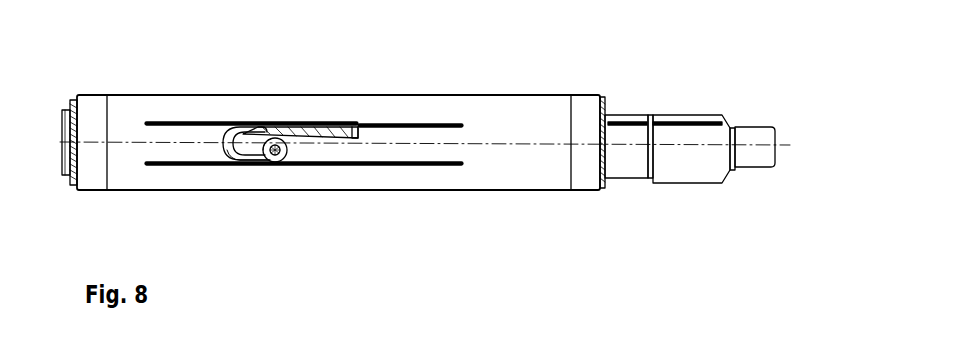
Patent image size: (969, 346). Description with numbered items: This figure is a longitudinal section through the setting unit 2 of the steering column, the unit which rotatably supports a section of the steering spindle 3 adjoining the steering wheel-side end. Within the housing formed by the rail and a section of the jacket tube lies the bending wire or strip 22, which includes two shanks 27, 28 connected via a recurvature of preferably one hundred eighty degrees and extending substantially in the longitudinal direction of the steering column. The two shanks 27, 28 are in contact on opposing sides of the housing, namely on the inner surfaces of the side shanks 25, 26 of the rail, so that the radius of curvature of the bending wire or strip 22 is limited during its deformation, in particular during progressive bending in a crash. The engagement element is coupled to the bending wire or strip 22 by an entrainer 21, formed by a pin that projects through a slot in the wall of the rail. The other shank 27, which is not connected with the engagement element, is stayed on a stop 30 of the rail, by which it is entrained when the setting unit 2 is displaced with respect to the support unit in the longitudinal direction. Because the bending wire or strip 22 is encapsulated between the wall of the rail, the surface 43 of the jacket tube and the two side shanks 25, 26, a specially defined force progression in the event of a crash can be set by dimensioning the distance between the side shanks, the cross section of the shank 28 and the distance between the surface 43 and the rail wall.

The setting unit 2 is at (549, 93).
The steering spindle 3 is at (673, 161).
The entrainer 21 is at (278, 163).
The bending wire or strip 22 is at (220, 137).
The side shank 25 is at (422, 133).
The side shank 26 is at (445, 164).
The shank 27 is at (313, 125).
The shank 28 is at (245, 162).
The stop 30 is at (359, 128).
The surface 43 is at (328, 148).